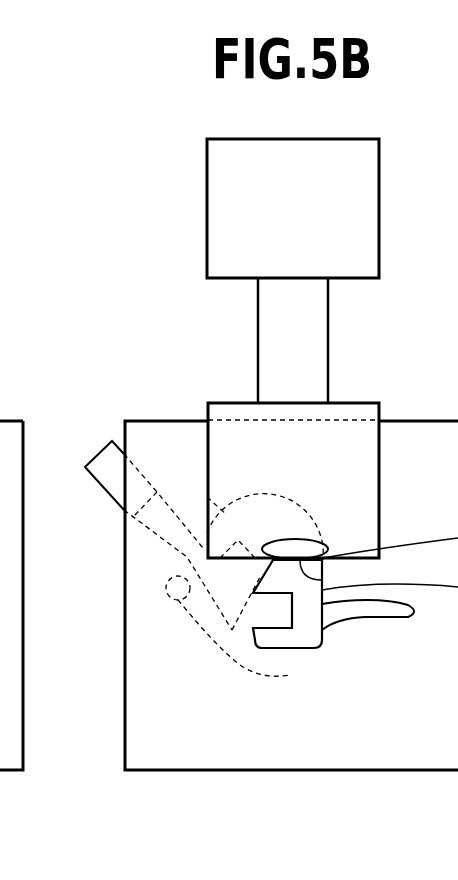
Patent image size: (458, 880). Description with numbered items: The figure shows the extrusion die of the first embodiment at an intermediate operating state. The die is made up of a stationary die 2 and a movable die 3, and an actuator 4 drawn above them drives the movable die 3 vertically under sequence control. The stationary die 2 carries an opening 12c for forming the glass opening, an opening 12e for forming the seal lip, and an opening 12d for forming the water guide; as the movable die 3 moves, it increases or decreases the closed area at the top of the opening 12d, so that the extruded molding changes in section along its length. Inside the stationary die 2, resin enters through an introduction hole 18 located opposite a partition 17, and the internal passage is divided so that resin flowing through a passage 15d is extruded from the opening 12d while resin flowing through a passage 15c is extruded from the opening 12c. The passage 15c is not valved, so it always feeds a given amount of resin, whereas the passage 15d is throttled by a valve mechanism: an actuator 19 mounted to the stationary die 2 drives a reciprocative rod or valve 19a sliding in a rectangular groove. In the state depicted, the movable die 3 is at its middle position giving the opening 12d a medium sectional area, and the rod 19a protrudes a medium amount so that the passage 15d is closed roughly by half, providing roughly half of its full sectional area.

The stationary die 2 is at (155, 733).
The movable die 3 is at (217, 403).
The actuator 4 is at (217, 187).
The opening 12c is at (290, 648).
The opening 12d is at (0, 546).
The opening 12e is at (366, 613).
The passage 15c is at (195, 620).
The passage 15d is at (206, 490).
The partition 17 is at (0, 588).
The introduction hole 18 is at (167, 594).
The actuator 19 is at (100, 460).
The rod or valve 19a is at (176, 576).